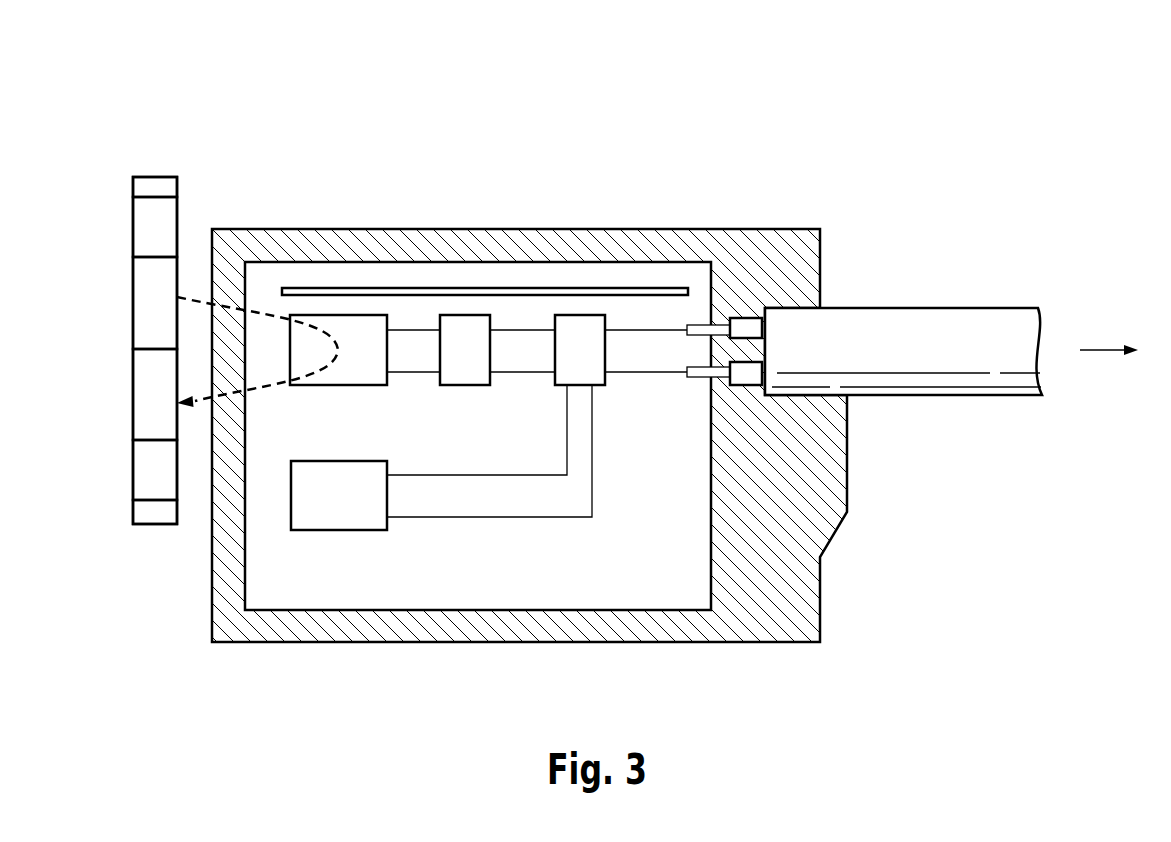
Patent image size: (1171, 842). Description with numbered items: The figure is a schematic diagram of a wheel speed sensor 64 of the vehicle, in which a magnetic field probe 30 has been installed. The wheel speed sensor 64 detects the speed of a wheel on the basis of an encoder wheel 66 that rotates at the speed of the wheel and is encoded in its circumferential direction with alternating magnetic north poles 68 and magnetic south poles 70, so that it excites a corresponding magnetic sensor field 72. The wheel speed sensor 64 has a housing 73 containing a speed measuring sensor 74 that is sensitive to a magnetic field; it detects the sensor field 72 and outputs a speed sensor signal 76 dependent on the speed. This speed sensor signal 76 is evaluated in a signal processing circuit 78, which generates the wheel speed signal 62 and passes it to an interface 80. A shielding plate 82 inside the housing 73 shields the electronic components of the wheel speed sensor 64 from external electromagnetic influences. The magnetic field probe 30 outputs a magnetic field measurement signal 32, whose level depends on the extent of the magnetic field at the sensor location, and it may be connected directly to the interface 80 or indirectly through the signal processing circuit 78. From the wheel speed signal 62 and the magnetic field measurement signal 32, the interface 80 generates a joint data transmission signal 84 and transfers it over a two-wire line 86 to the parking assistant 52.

The magnetic field probe 30 is at (340, 510).
The magnetic field measurement signal 32 is at (503, 476).
The parking assistant 52 is at (1103, 349).
The wheel speed signal 62 is at (540, 330).
The wheel speed sensor 64 is at (197, 103).
The encoder wheel 66 is at (92, 142).
The magnetic north poles 68 is at (133, 186).
The magnetic south poles 70 is at (133, 230).
The magnetic sensor field 72 is at (195, 296).
The housing 73 is at (503, 229).
The speed measuring sensor 74 is at (352, 358).
The speed sensor signal 76 is at (428, 330).
The signal processing circuit 78 is at (467, 360).
The interface 80 is at (595, 387).
The shielding plate 82 is at (363, 287).
The joint data transmission signal 84 is at (678, 332).
The two-wire line 86 is at (960, 396).